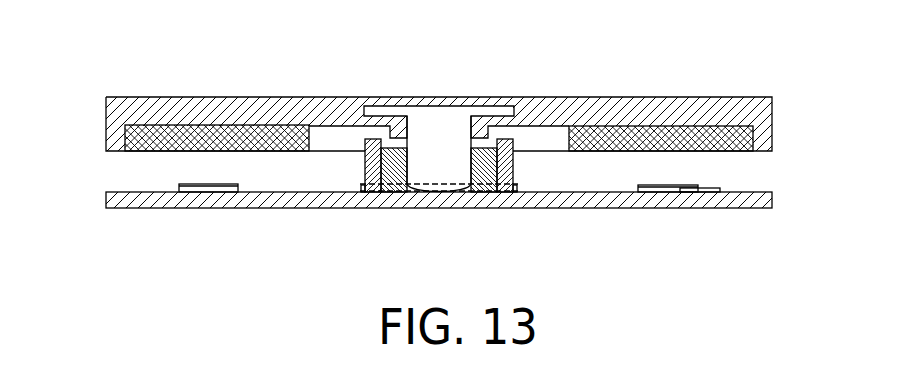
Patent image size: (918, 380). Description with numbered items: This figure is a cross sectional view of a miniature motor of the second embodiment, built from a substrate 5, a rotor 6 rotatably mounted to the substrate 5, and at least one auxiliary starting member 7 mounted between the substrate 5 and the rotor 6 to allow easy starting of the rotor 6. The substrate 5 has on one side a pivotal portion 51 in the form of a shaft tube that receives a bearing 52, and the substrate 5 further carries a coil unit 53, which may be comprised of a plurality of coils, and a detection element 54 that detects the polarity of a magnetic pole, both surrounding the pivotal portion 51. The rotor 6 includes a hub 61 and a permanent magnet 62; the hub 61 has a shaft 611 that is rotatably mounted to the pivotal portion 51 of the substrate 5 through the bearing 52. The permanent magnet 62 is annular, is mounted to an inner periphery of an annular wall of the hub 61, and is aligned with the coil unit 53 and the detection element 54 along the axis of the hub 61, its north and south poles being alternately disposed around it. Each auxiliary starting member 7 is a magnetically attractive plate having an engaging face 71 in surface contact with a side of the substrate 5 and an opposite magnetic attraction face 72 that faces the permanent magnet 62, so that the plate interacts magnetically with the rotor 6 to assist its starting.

The substrate 5 is at (275, 203).
The pivotal portion 51 is at (379, 149).
The bearing 52 is at (397, 176).
The coil unit 53 is at (445, 180).
The detection element 54 is at (720, 187).
The rotor 6 is at (711, 73).
The hub 61 is at (755, 100).
The permanent magnet 62 is at (748, 153).
The shaft 611 is at (418, 157).
The auxiliary starting member 7 is at (212, 162).
The engaging face 71 is at (195, 192).
The magnetic attraction face 72 is at (179, 185).